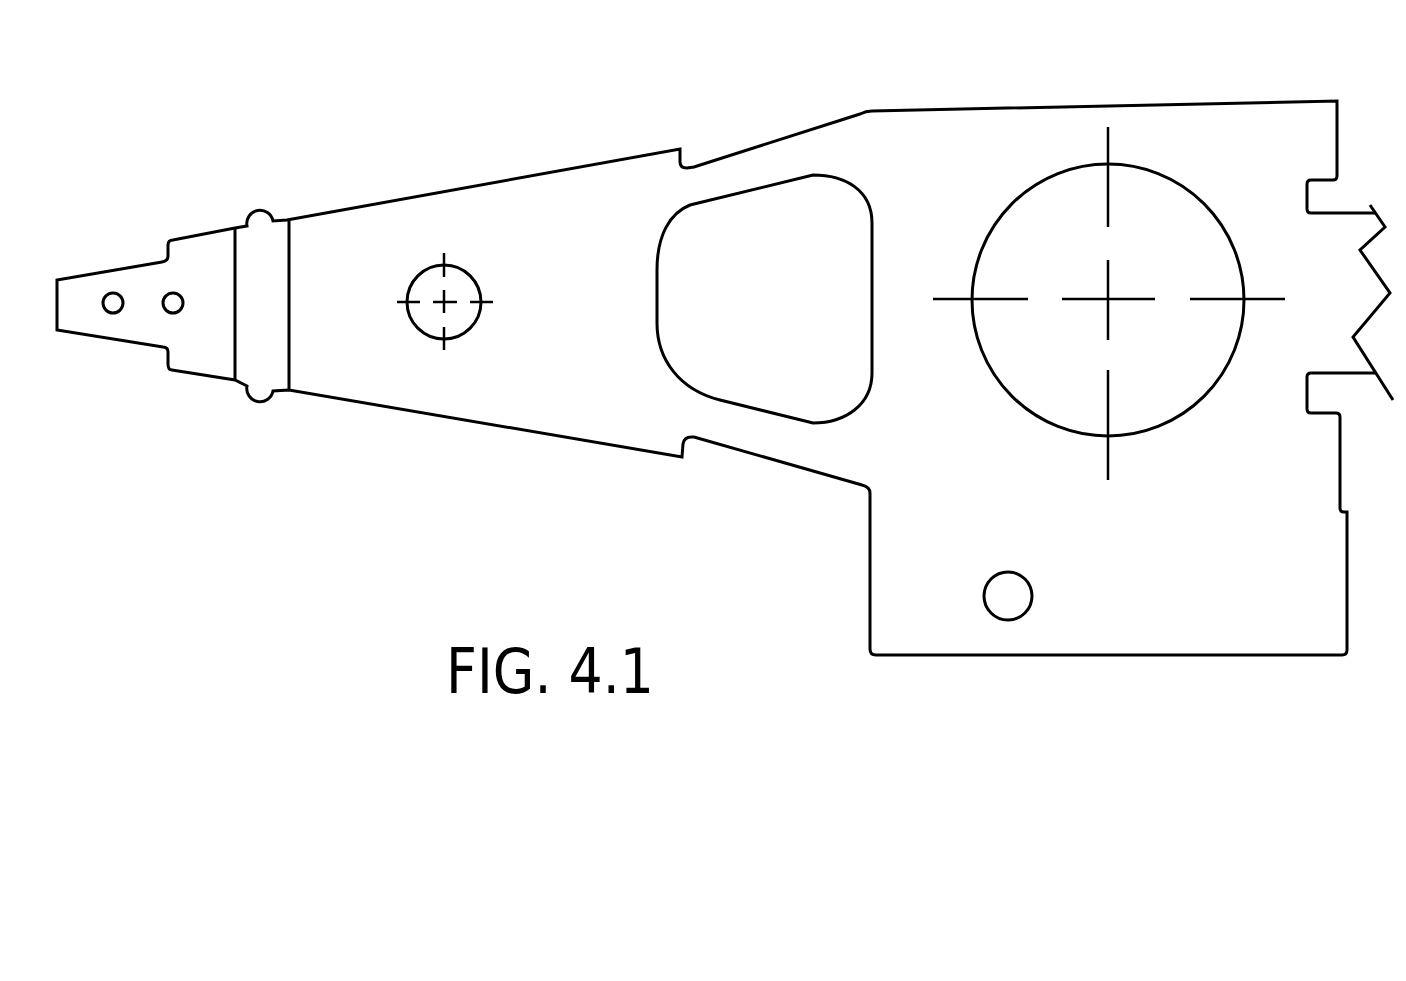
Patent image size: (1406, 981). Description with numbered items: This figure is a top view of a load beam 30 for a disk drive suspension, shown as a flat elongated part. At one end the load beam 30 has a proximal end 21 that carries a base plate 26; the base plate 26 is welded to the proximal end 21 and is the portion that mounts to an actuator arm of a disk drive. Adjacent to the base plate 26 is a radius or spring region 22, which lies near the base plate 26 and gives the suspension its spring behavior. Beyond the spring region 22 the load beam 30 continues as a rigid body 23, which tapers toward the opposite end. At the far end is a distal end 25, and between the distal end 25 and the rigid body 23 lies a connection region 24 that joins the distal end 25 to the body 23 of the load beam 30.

The proximal end 21 is at (1236, 130).
The radius or spring region 22 is at (787, 158).
The rigid body 23 is at (504, 206).
The connection region 24 is at (260, 197).
The distal end 25 is at (131, 262).
The base plate 26 is at (954, 502).
The load beam 30 is at (205, 441).